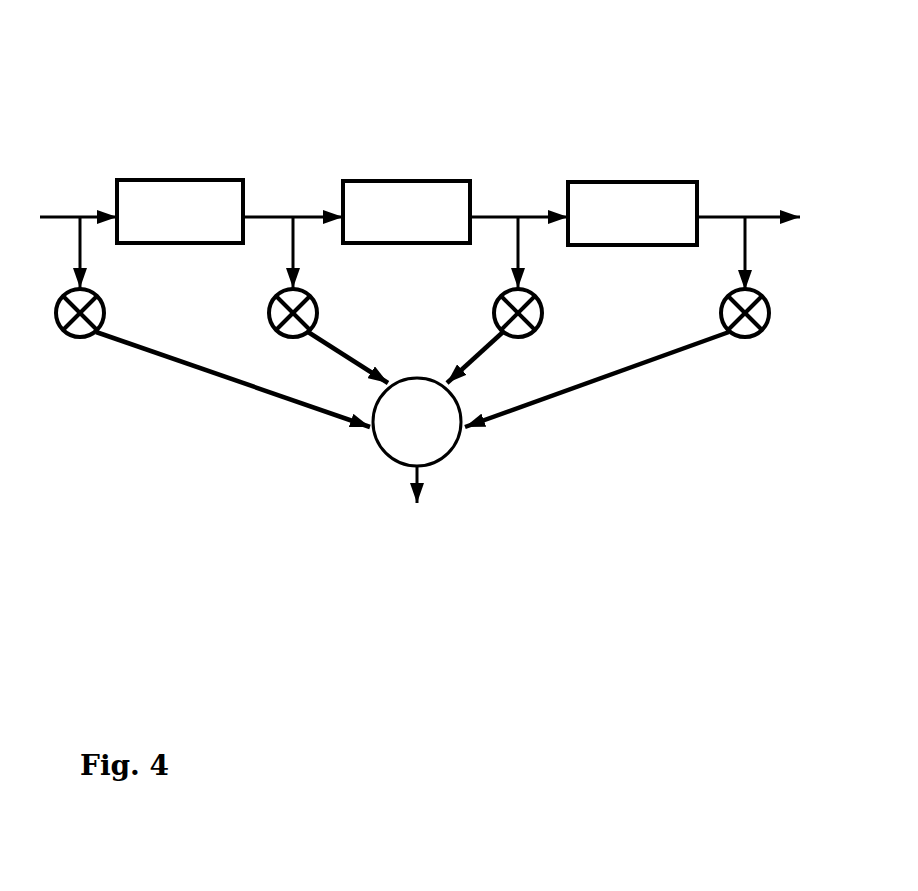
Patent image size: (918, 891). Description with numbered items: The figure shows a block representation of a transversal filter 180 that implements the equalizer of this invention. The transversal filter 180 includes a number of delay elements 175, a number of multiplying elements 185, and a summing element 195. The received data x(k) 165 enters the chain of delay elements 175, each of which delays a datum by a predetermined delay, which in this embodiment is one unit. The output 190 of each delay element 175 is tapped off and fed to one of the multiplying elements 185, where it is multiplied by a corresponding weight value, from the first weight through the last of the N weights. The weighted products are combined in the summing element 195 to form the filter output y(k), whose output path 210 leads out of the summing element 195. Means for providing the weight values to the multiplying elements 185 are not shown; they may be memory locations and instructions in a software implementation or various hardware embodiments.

The received data x(k) 165 is at (95, 143).
The delay elements 175 is at (210, 160).
The transversal filter 180 is at (408, 647).
The multiplying elements 185 is at (258, 340).
The output of each delay element 190 is at (500, 242).
The summing element 195 is at (455, 455).
The output signal y(k) 210 is at (437, 485).